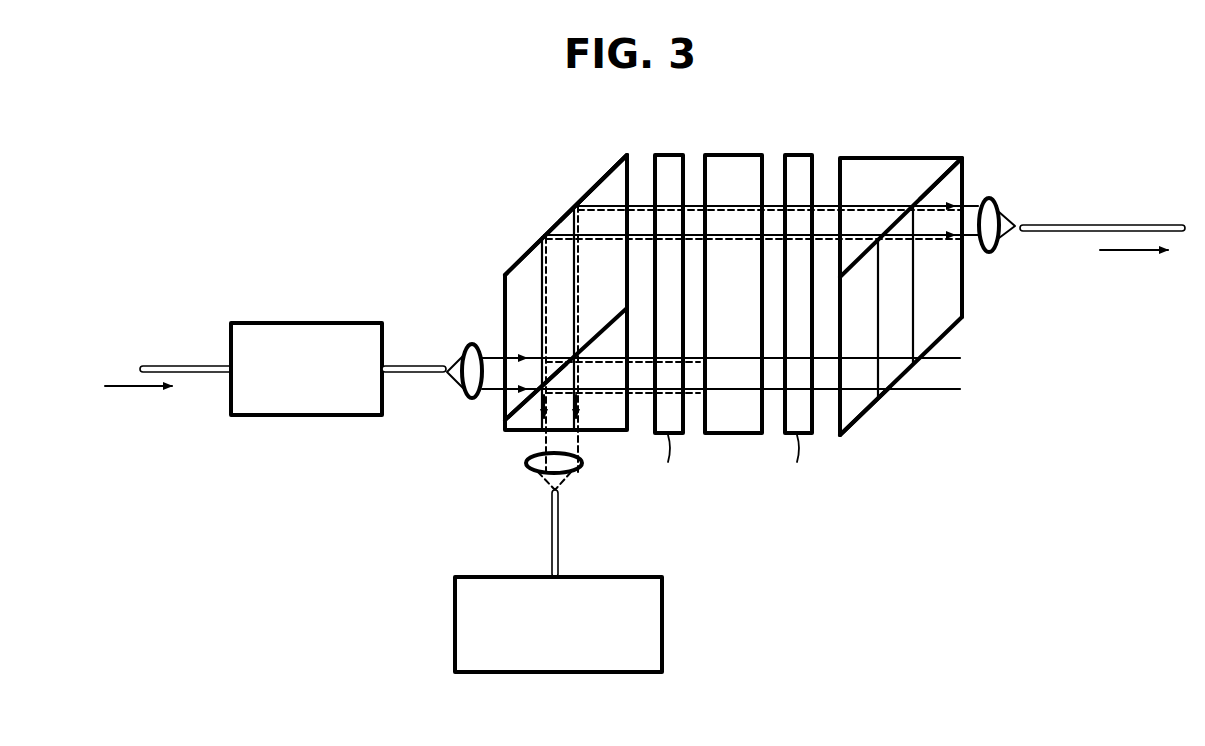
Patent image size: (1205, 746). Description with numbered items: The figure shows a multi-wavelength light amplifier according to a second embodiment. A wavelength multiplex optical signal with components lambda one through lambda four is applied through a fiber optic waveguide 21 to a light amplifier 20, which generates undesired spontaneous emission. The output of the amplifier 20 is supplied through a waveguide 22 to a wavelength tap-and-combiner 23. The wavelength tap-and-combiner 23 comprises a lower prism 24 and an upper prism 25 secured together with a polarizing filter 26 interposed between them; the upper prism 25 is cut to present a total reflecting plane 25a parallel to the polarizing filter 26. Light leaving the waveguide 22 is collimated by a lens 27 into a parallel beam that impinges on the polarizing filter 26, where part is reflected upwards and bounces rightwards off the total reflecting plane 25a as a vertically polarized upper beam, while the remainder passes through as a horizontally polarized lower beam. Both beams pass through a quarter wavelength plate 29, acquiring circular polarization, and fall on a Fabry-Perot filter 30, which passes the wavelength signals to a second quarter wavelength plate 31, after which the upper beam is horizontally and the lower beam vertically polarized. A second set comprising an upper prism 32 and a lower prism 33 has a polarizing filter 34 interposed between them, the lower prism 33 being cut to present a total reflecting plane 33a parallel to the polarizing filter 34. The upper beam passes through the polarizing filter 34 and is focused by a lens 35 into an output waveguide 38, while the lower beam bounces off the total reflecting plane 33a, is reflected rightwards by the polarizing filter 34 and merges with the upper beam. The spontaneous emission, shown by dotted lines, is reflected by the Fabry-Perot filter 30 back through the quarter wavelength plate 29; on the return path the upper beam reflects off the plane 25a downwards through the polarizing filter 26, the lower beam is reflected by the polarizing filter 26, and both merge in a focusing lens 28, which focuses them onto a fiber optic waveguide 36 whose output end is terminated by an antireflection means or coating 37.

The light amplifier 20 is at (296, 323).
The fiber optic waveguide 21 is at (172, 366).
The waveguide 22 is at (418, 366).
The wavelength tap-and-combiner (WTC) 23 is at (442, 180).
The lower prism 24 is at (595, 425).
The upper prism 25 is at (525, 265).
The total reflecting plane 25a is at (590, 190).
The polarizing filter 26 is at (505, 418).
The lens 27 is at (470, 343).
The focusing lens 28 is at (527, 462).
The quarter wavelength plate 29 is at (670, 155).
The Fabry-Perot filter 30 is at (727, 155).
The second quarter wavelength plate 31 is at (800, 155).
The upper prism 32 is at (902, 158).
The lower prism 33 is at (935, 330).
The total reflecting plane 33a is at (866, 410).
The polarizing filter 34 is at (965, 175).
The lens 35 is at (990, 253).
The fiber optic waveguide 36 is at (558, 540).
The antireflection means or coating 37 is at (588, 577).
The output waveguide 38 is at (1108, 225).